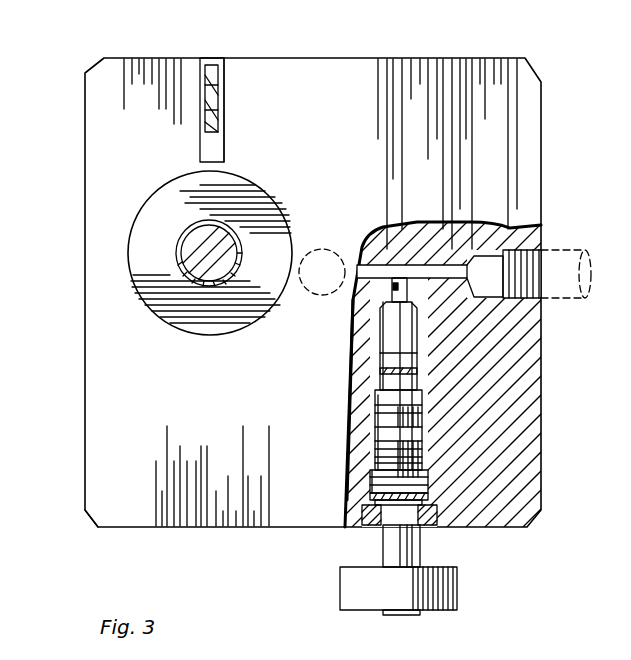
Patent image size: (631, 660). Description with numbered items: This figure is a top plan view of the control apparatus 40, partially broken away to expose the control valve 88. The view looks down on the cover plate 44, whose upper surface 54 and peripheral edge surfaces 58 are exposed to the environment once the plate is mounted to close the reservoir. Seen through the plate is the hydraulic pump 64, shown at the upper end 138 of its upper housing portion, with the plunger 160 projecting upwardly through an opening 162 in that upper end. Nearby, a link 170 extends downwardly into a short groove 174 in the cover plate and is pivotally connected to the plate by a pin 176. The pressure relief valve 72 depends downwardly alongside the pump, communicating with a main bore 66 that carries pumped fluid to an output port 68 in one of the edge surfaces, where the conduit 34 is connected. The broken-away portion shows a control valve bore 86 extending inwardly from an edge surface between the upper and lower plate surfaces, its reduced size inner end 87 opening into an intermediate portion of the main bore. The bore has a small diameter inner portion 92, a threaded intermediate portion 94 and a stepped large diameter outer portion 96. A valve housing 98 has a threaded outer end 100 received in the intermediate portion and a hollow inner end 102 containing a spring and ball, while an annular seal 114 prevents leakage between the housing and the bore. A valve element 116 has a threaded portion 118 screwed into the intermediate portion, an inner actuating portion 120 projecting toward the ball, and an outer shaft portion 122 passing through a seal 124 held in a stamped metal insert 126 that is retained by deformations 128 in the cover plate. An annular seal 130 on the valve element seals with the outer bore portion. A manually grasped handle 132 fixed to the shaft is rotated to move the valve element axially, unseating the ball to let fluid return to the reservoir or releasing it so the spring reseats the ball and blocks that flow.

The conduit 34 is at (585, 256).
The control apparatus 40 is at (565, 148).
The cover plate 44 is at (547, 105).
The upper surface 54 is at (147, 493).
The edge surfaces 58 is at (430, 58).
The hydraulic pump 64 is at (214, 279).
The main bore 66 is at (437, 265).
The output port 68 is at (530, 283).
The pressure relief valve 72 is at (330, 250).
The control valve bore 86 is at (375, 392).
The reduced size inner end 87 is at (392, 299).
The control valve 88 is at (430, 407).
The small diameter inner portion 92 is at (398, 331).
The intermediate portion 94 is at (375, 412).
The outer portion 96 is at (372, 500).
The valve housing 98 is at (380, 353).
The threaded outer end 100 is at (425, 425).
The hollow inner end 102 is at (412, 335).
The annular seal 114 is at (417, 371).
The valve element 116 is at (364, 455).
The threaded portion 118 is at (372, 482).
The inner actuating portion 120 is at (400, 442).
The outer shaft portion 122 is at (385, 548).
The seal 124 is at (420, 536).
The stamped metal insert 126 is at (437, 512).
The deformations 128 is at (368, 523).
The annular seal 130 is at (432, 490).
The handle 132 is at (445, 592).
The upper end 138 is at (163, 312).
The plunger 160 is at (203, 252).
The opening 162 is at (220, 240).
The link 170 is at (218, 110).
The groove 174 is at (219, 147).
The pin 176 is at (218, 105).